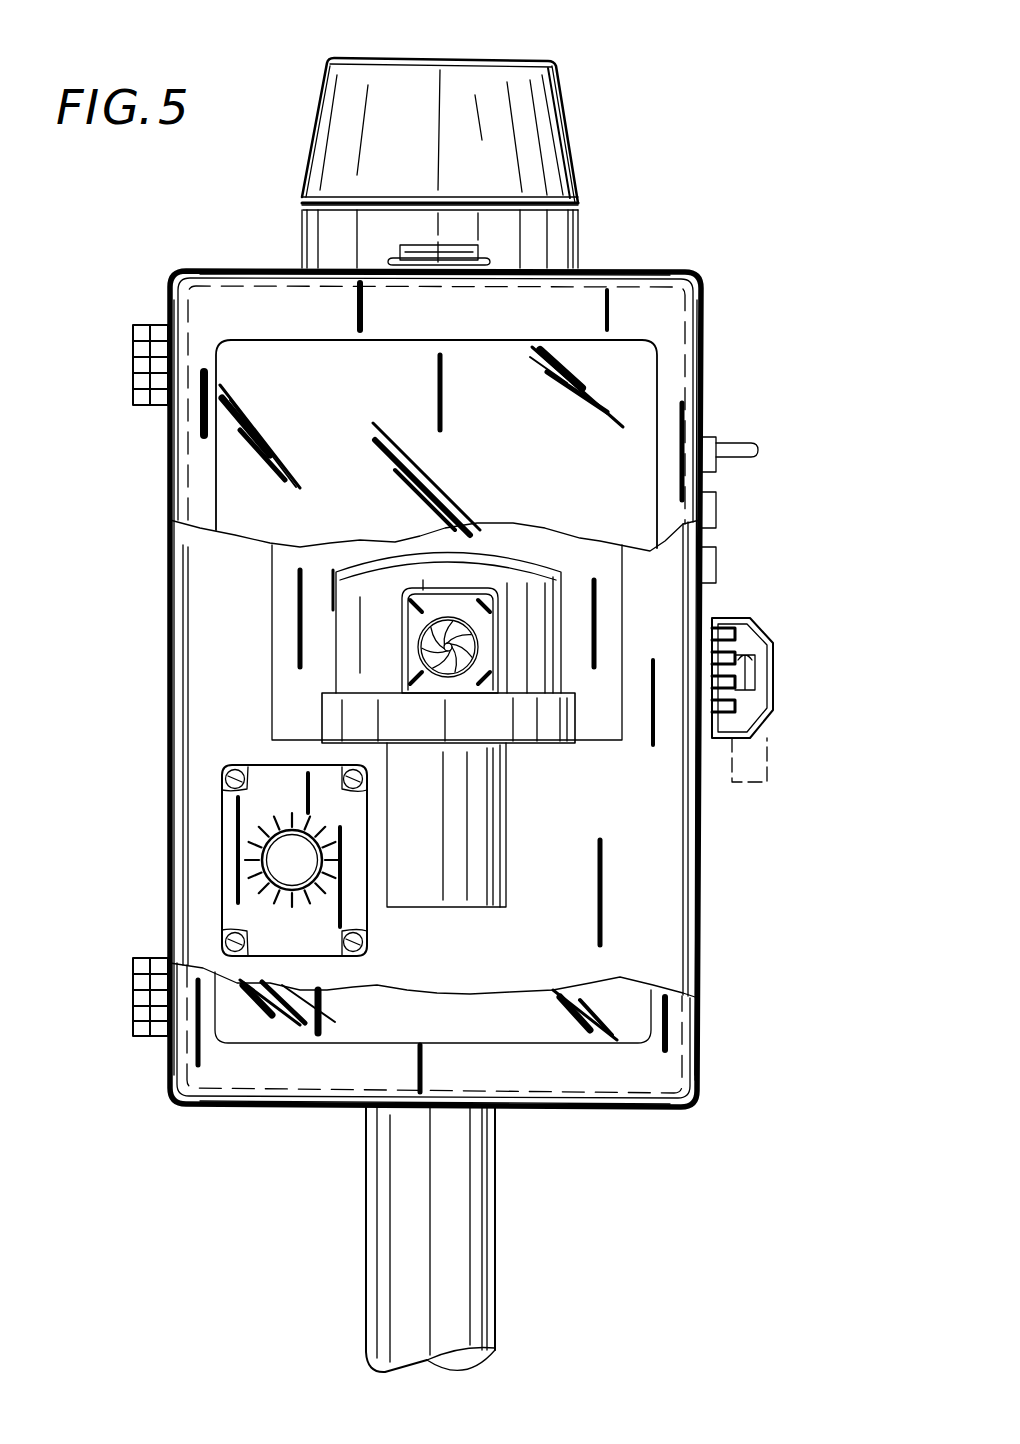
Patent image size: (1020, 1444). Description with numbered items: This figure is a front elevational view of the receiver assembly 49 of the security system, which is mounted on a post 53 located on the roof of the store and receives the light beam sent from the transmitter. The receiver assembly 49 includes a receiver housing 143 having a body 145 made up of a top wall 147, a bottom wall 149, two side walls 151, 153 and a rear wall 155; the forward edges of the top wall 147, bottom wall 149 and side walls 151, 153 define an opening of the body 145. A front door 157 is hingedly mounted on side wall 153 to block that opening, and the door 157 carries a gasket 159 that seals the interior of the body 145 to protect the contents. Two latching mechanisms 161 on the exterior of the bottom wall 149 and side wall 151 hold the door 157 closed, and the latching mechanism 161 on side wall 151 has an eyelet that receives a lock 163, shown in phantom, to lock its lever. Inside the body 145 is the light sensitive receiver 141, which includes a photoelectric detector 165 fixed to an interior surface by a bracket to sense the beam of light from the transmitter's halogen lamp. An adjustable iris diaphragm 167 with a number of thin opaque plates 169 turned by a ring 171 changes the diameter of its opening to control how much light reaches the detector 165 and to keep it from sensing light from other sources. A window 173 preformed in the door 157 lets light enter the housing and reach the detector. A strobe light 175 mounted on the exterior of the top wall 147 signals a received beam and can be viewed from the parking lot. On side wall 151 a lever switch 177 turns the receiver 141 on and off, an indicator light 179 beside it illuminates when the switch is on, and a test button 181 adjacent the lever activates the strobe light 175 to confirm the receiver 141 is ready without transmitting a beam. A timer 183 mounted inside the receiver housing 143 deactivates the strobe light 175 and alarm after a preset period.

The receiver assembly 49 is at (686, 1200).
The post 53 is at (495, 1295).
The light sensitive receiver 141 is at (326, 632).
The receiver housing 143 is at (703, 1033).
The body 145 is at (703, 882).
The top wall 147 is at (216, 268).
The bottom wall 149 is at (275, 1107).
The side wall 151 is at (685, 762).
The side wall 153 is at (190, 778).
The rear wall 155 is at (527, 882).
The front door 157 is at (205, 470).
The gasket 159 is at (590, 296).
The latching mechanism 161 is at (450, 248).
The lock 163 is at (768, 760).
The photoelectric detector 165 is at (493, 633).
The adjustable iris diaphragm 167 is at (450, 652).
The thin opaque plates 169 is at (412, 649).
The ring 171 is at (410, 597).
The window 173 is at (288, 432).
The strobe light 175 is at (485, 58).
The lever switch 177 is at (757, 456).
The indicator light 179 is at (718, 512).
The test button 181 is at (718, 573).
The timer 183 is at (236, 830).